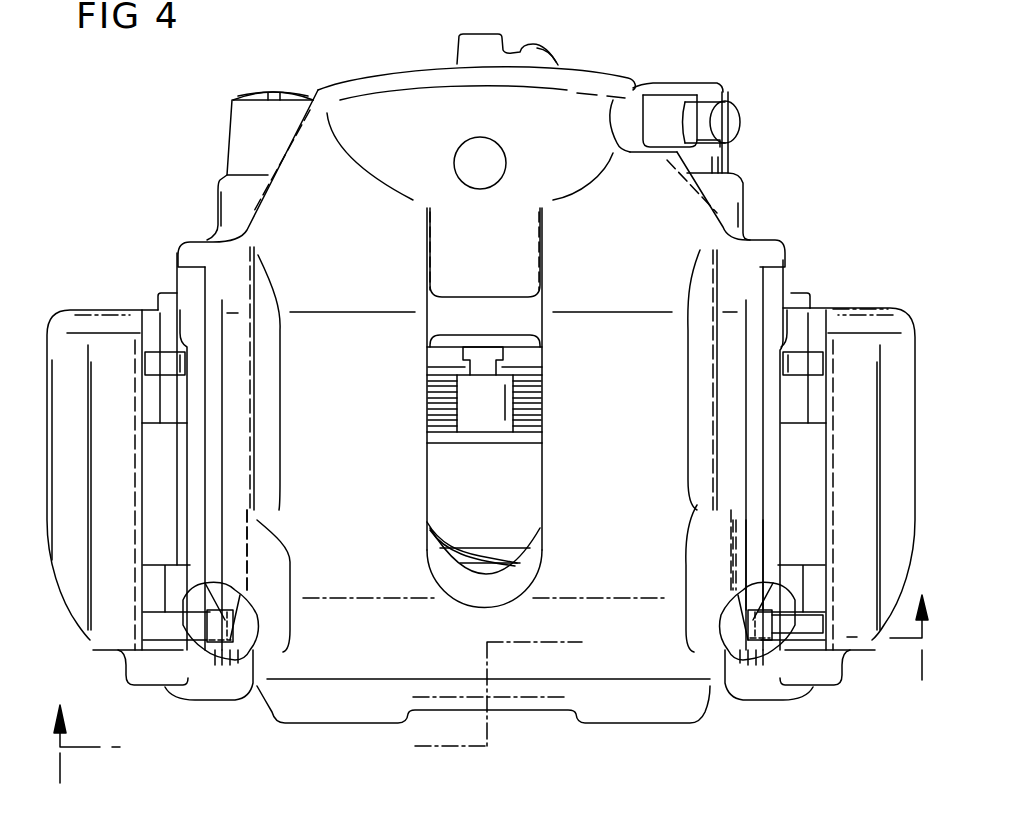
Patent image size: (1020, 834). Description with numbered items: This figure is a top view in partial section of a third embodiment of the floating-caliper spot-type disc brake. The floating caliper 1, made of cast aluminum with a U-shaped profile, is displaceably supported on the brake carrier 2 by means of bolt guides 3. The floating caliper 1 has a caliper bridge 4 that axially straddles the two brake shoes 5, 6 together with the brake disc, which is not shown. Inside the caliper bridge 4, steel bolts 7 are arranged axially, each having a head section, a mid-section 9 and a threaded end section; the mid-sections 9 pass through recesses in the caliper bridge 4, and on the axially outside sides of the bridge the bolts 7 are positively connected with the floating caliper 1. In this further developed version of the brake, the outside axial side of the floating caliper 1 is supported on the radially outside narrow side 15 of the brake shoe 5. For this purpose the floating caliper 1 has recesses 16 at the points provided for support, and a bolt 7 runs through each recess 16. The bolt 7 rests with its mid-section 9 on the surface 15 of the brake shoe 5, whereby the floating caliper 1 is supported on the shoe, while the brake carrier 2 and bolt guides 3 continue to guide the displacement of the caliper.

The floating caliper 1 is at (600, 66).
The brake carrier 2 is at (855, 298).
The bolt guides 3 is at (243, 132).
The caliper bridge 4 is at (624, 441).
The brake shoe 5 is at (440, 535).
The brake shoe 6 is at (437, 405).
The steel bolts 7 is at (733, 575).
The mid-section 9 is at (733, 553).
The radially outside narrow side 15 is at (773, 627).
The recesses 16 is at (197, 677).